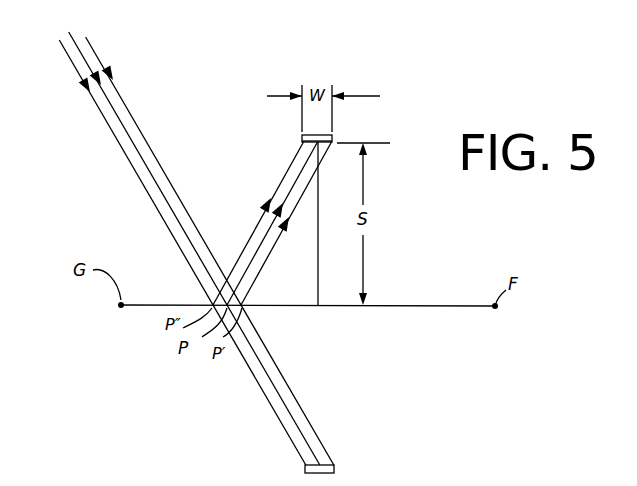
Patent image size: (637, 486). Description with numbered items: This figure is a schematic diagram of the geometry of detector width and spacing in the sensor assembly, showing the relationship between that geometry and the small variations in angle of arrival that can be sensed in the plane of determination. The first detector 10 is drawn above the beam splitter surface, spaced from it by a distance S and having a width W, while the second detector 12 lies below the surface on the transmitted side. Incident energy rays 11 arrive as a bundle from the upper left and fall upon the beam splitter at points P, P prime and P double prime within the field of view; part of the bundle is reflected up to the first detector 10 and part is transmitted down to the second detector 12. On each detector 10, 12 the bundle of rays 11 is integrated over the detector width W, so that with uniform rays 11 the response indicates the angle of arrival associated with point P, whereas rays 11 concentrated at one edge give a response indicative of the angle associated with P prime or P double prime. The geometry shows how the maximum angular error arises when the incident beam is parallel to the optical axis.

The first detector 10 is at (332, 136).
The incident energy rays 11 is at (79, 21).
The second detector 12 is at (334, 468).